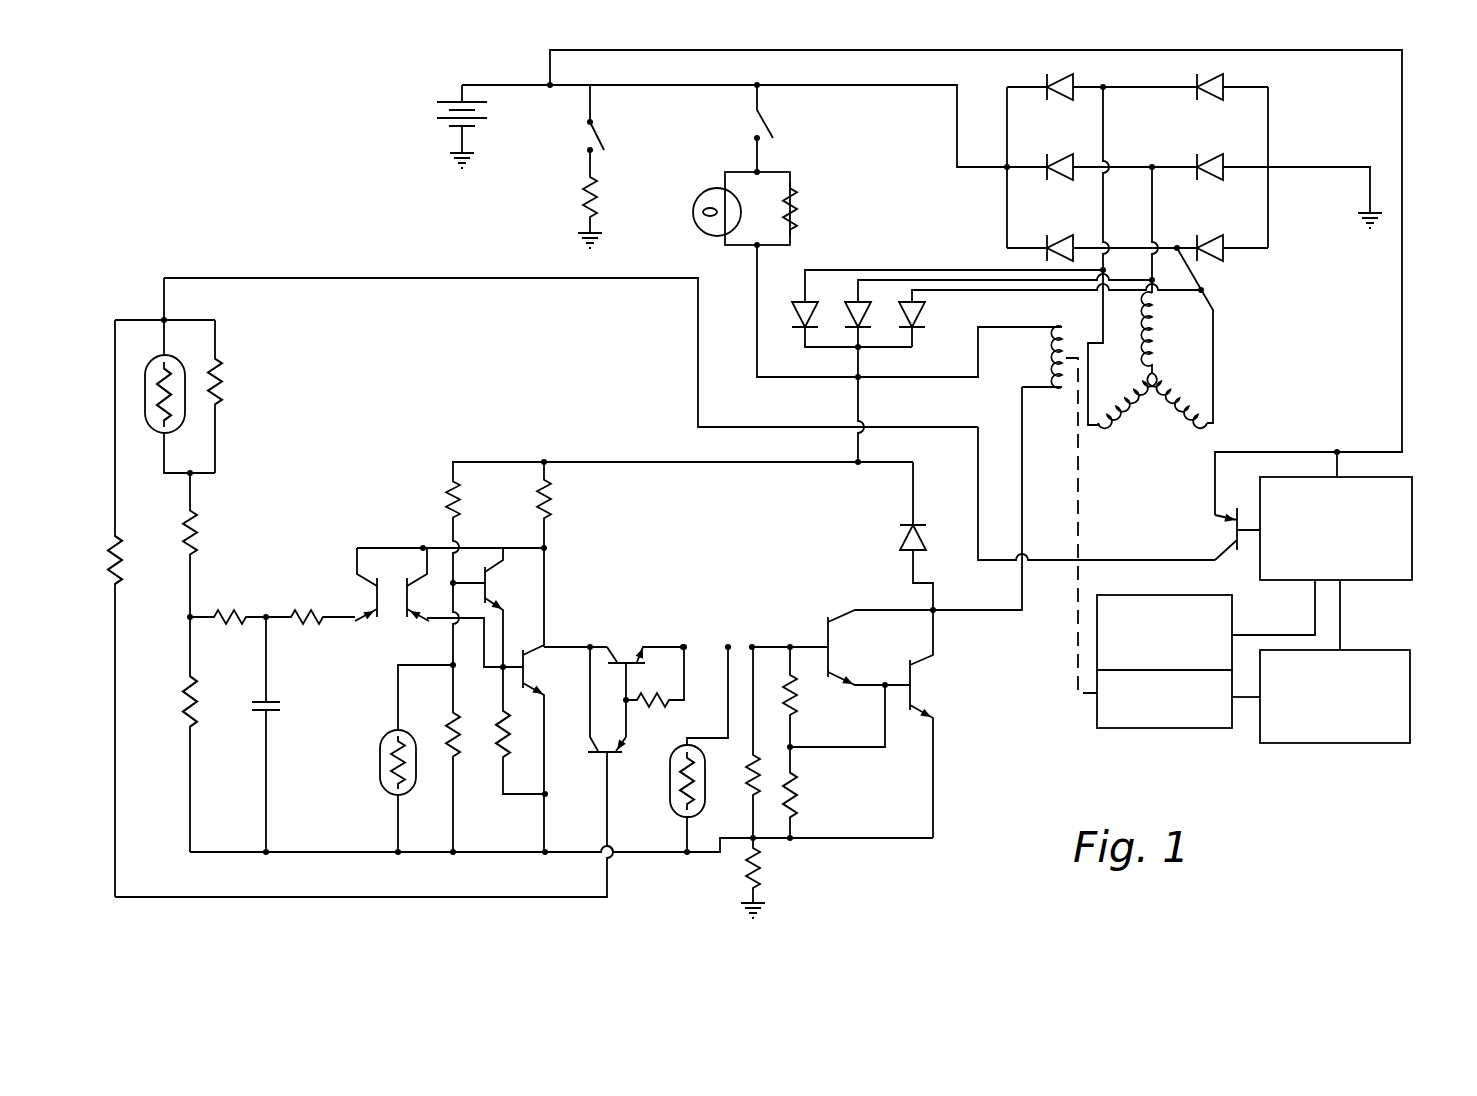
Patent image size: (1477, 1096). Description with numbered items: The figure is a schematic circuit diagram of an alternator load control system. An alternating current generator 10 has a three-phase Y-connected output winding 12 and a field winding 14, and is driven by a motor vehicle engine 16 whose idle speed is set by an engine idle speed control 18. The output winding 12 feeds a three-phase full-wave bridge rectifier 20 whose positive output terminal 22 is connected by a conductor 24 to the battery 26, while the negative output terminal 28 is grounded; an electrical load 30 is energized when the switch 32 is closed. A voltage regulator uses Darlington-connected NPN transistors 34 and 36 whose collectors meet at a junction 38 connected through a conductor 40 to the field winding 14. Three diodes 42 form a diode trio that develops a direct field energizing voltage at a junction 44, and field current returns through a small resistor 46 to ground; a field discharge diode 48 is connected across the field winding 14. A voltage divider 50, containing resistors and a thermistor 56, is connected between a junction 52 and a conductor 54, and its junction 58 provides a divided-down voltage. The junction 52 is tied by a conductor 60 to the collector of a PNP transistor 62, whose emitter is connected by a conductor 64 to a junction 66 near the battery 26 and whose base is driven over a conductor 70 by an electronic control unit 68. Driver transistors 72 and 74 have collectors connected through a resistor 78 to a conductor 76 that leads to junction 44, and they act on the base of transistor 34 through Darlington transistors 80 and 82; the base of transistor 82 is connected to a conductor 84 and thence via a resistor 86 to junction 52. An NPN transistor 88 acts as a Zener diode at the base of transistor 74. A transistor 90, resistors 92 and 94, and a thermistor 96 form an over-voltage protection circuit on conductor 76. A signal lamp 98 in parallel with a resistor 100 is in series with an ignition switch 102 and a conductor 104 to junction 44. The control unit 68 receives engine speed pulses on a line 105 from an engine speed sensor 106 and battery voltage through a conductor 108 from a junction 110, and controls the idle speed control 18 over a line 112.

The alternating current generator 10 is at (1082, 333).
The output winding 12 is at (1157, 402).
The field winding 14 is at (1050, 352).
The engine 16 is at (1195, 728).
The engine idle speed control 18 is at (1105, 591).
The bridge rectifier 20 is at (1280, 120).
The positive output terminal 22 is at (1003, 170).
The conductor 24 is at (640, 85).
The battery 26 is at (440, 128).
The negative output terminal 28 is at (1272, 165).
The electrical load 30 is at (598, 195).
The switch 32 is at (588, 130).
The NPN transistor 34 is at (832, 658).
The NPN transistor 36 is at (915, 690).
The junction 38 is at (935, 612).
The conductor 40 is at (980, 470).
The diodes 42 is at (908, 310).
The junction 44 is at (862, 380).
The resistor 46 is at (760, 870).
The field discharge diode 48 is at (898, 540).
The voltage divider 50 is at (218, 480).
The junction 52 is at (164, 318).
The conductor 54 is at (350, 852).
The thermistor 56 is at (147, 420).
The junction 58 is at (193, 617).
The conductor 60 is at (372, 278).
The PNP transistor 62 is at (1230, 528).
The conductor 64 is at (712, 50).
The junction 66 is at (548, 82).
The electronic control unit 68 is at (1418, 548).
The conductor 70 is at (1244, 535).
The transistor 72 is at (530, 675).
The transistor 74 is at (395, 590).
The conductor 76 is at (672, 462).
The resistor 78 is at (553, 500).
The transistor 80 is at (618, 650).
The transistor 82 is at (597, 757).
The conductor 84 is at (412, 895).
The resistor 86 is at (125, 565).
The NPN transistor 88 is at (370, 597).
The transistor 90 is at (490, 590).
The resistor 92 is at (460, 500).
The resistor 94 is at (455, 730).
The thermistor 96 is at (385, 765).
The signal lamp 98 is at (698, 205).
The resistor 100 is at (800, 205).
The ignition switch 102 is at (775, 126).
The conductor 104 is at (768, 380).
The line 105 is at (1342, 610).
The engine speed sensor 106 is at (1297, 745).
The conductor 108 is at (1337, 467).
The junction 110 is at (1337, 450).
The line 112 is at (1297, 635).